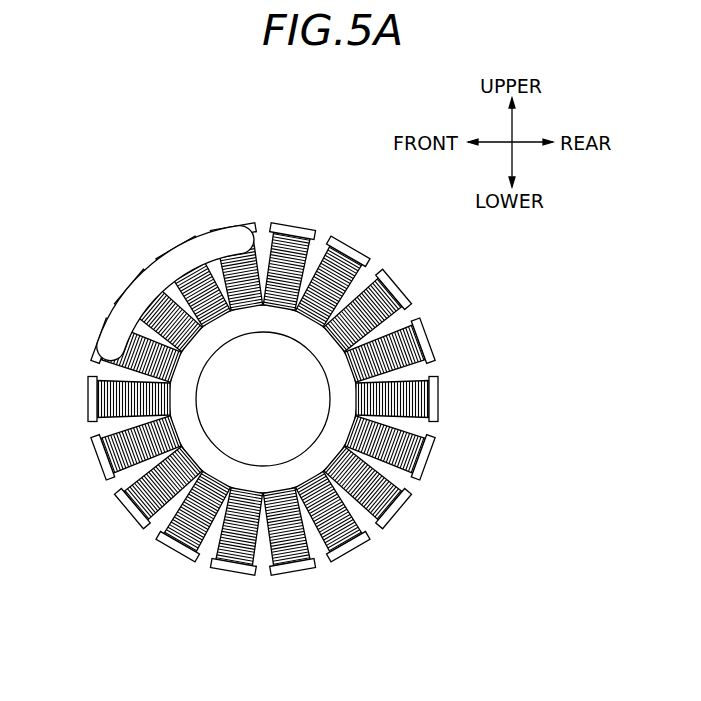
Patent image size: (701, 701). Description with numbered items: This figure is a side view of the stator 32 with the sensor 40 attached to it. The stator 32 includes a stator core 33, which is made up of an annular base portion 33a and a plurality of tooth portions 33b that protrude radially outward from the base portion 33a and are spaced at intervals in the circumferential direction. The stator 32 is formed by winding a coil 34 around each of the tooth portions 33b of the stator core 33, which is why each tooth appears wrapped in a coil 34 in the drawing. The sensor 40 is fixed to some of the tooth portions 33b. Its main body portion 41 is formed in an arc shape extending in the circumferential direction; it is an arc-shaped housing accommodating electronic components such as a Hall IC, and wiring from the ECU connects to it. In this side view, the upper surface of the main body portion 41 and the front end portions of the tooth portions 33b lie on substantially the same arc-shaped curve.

The stator 32 is at (287, 222).
The stator core 33 is at (309, 342).
The annular base portion 33a is at (328, 452).
The tooth portions 33b is at (300, 573).
The coil 34 is at (464, 383).
The sensor 40 is at (147, 262).
The main body portion 41 is at (173, 272).